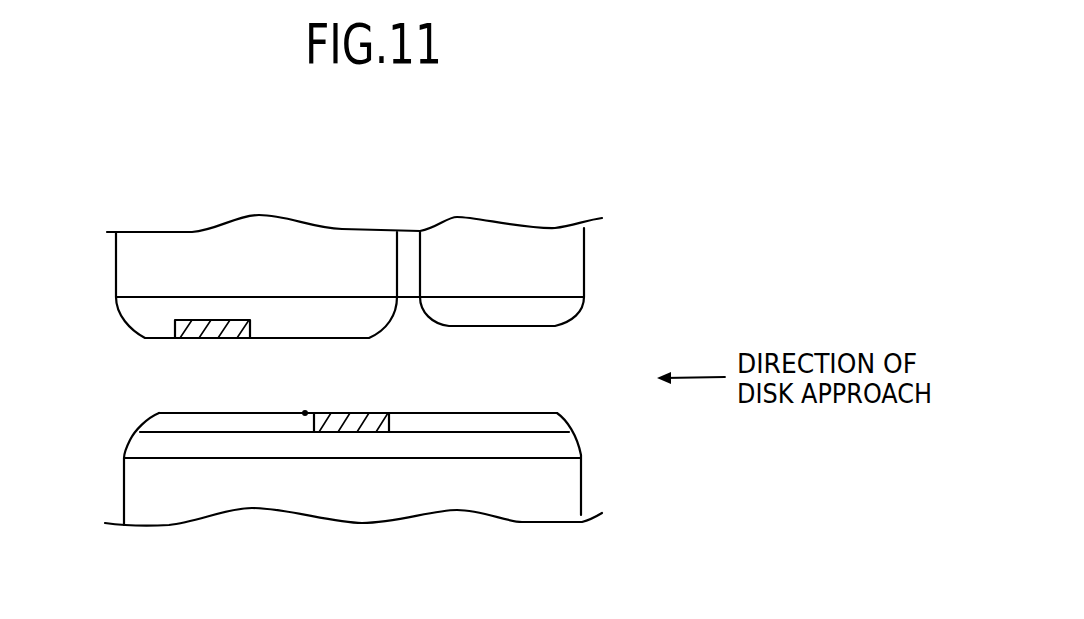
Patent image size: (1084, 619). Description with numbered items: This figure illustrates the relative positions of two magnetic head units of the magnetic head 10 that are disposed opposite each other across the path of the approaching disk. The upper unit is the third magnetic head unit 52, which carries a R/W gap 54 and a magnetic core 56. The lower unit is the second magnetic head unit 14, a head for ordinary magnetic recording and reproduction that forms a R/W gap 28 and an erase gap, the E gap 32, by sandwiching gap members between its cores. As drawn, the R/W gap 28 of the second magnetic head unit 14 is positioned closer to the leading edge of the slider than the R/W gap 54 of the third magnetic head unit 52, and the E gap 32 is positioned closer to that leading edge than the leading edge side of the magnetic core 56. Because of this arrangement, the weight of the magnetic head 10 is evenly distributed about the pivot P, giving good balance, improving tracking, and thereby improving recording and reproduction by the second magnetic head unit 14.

The magnetic head 10 is at (133, 197).
The third magnetic head unit 52 is at (604, 305).
The R/W gap 54 is at (203, 323).
The magnetic core 56 is at (234, 340).
The second magnetic head unit 14 is at (602, 433).
The E gap 32 is at (340, 412).
The R/W gap 28 is at (362, 412).
The pivot P is at (303, 413).